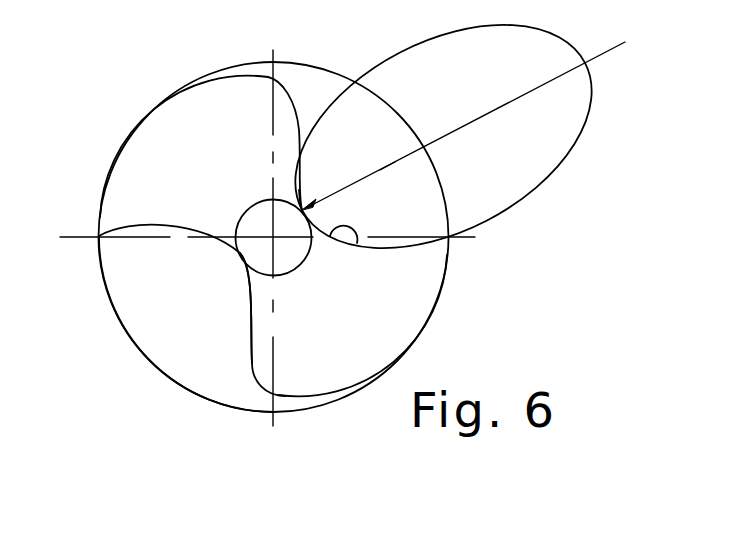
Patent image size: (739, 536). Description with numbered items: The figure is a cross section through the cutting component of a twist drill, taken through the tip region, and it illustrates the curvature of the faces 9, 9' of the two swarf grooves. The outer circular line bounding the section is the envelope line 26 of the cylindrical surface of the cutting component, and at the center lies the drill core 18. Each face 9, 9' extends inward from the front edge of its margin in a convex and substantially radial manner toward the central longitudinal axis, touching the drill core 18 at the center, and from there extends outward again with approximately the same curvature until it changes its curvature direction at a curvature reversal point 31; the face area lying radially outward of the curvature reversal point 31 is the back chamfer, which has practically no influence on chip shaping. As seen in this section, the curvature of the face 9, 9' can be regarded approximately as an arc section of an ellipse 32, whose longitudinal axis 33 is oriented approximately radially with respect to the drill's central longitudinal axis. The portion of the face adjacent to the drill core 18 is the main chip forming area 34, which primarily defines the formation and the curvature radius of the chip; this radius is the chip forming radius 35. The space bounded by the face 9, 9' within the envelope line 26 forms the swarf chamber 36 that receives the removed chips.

The face 9 is at (361, 268).
The face 9' is at (222, 308).
The drill core 18 is at (262, 217).
The envelope line 26 is at (127, 338).
The curvature reversal point 31 is at (295, 102).
The ellipse 32 is at (540, 182).
The longitudinal axis of the ellipse 33 is at (598, 57).
The main chip forming area 34 is at (304, 206).
The chip forming radius 35 is at (388, 167).
The swarf chamber 36 is at (175, 340).